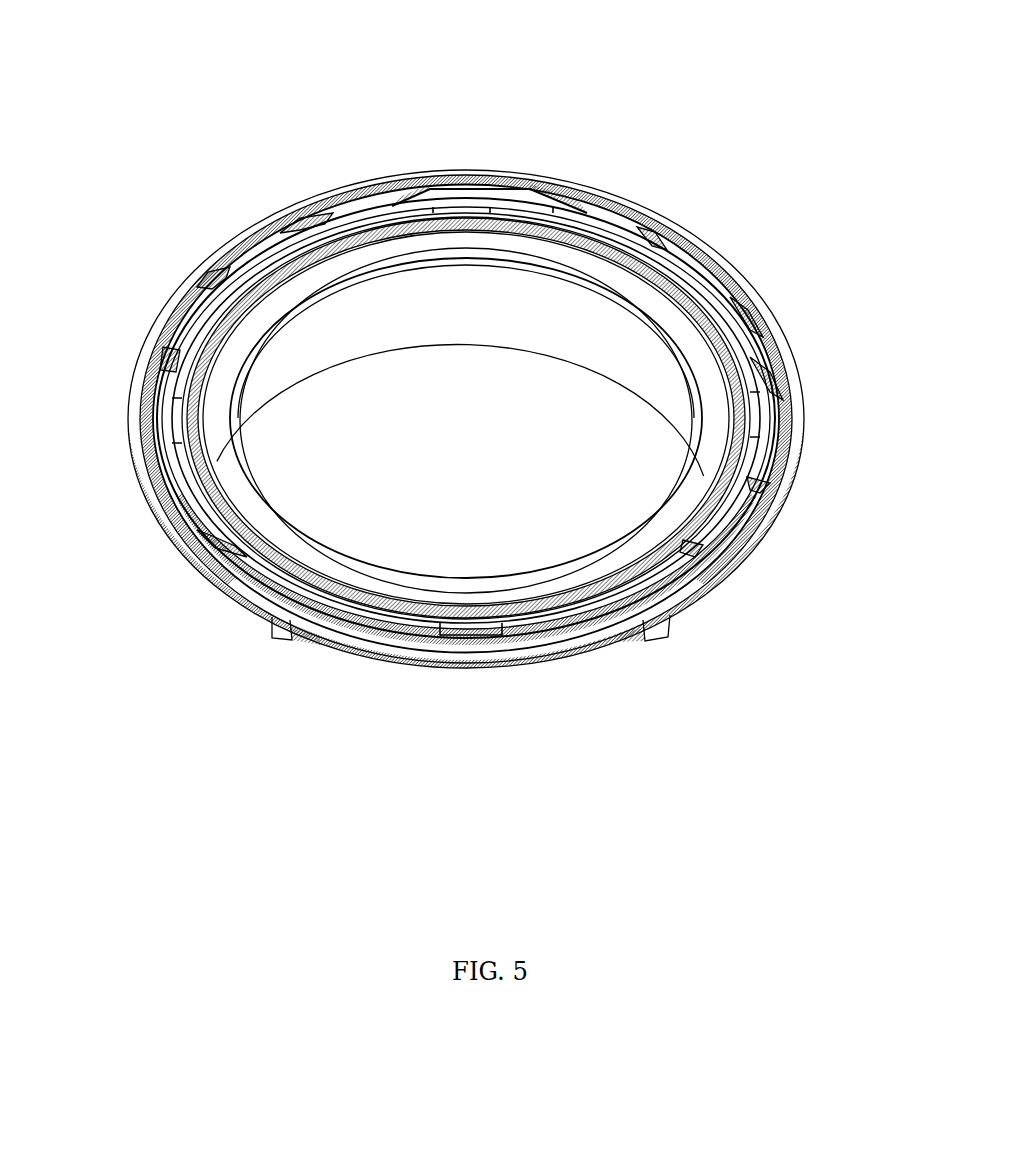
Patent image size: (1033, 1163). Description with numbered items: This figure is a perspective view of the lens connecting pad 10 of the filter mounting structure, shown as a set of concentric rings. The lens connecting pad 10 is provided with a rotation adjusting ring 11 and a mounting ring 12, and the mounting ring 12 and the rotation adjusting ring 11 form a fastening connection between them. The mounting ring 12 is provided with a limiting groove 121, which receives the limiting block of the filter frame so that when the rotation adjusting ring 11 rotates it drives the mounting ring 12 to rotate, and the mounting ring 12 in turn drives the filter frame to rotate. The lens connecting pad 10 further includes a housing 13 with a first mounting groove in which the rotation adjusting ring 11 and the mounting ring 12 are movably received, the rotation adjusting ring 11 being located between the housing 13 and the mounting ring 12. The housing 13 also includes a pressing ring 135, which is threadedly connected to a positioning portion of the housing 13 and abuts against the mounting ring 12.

The lens connecting pad 10 is at (460, 160).
The rotation adjusting ring 11 is at (454, 670).
The mounting ring 12 is at (203, 557).
The limiting groove 121 is at (757, 414).
The housing 13 is at (638, 178).
The pressing ring 135 is at (183, 322).